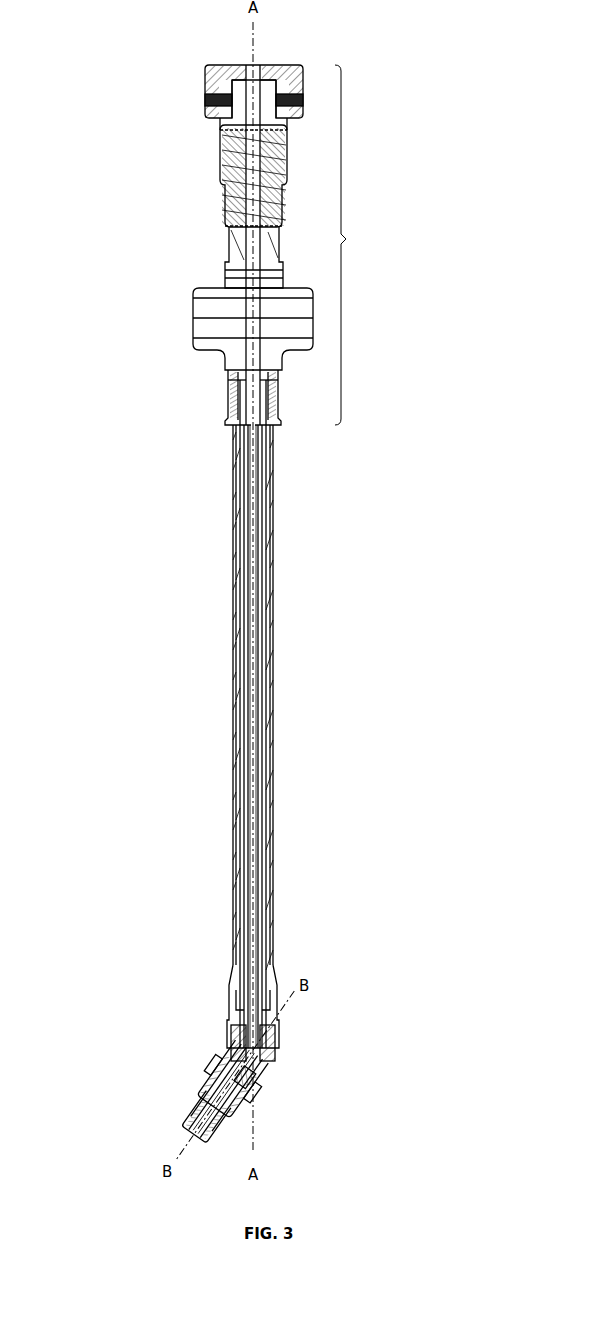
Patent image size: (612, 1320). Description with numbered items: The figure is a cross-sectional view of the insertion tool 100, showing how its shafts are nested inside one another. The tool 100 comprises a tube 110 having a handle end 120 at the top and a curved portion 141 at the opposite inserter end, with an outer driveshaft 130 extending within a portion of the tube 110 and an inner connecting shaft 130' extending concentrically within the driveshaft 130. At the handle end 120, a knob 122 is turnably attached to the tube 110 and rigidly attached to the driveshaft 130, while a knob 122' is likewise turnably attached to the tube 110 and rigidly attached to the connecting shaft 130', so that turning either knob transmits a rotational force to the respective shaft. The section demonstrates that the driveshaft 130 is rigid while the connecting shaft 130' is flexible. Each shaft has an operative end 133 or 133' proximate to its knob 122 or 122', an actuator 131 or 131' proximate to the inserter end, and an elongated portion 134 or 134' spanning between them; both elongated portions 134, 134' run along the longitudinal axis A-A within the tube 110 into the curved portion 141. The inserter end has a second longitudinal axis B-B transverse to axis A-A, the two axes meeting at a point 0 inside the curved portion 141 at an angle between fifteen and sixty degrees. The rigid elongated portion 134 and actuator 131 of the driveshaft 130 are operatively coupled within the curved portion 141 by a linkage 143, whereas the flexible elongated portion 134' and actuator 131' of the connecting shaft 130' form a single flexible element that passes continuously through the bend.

The insertion tool 100 is at (332, 678).
The tube 110 is at (273, 775).
The handle end 120 is at (358, 245).
The knob 122 is at (217, 329).
The knob 122' is at (215, 96).
The outer driveshaft 130 is at (296, 736).
The inner connecting shaft 130' is at (196, 640).
The actuator 131 is at (197, 1088).
The actuator 131' is at (178, 1093).
The operative end 133 is at (220, 397).
The operative end 133' is at (218, 223).
The elongated portion 134 is at (214, 736).
The elongated portion 134' is at (216, 736).
The curved portion 141 is at (276, 1046).
The linkage 143 is at (236, 1040).
The point O 0 is at (268, 1066).